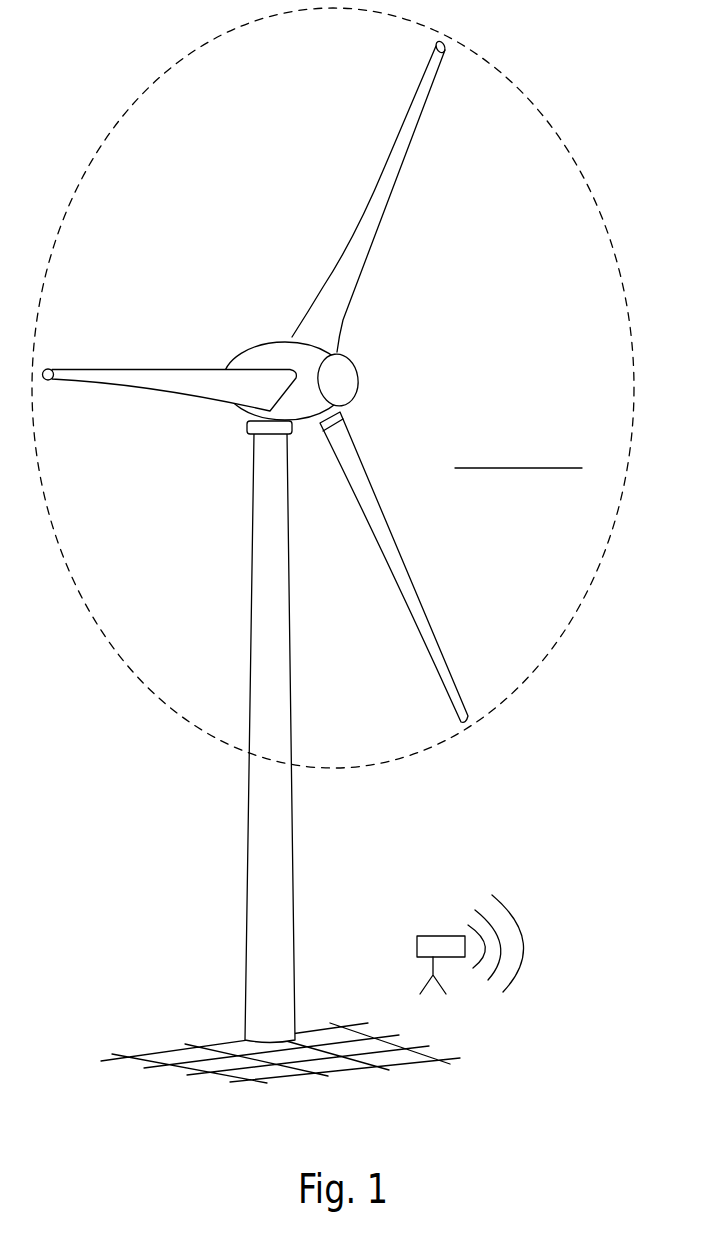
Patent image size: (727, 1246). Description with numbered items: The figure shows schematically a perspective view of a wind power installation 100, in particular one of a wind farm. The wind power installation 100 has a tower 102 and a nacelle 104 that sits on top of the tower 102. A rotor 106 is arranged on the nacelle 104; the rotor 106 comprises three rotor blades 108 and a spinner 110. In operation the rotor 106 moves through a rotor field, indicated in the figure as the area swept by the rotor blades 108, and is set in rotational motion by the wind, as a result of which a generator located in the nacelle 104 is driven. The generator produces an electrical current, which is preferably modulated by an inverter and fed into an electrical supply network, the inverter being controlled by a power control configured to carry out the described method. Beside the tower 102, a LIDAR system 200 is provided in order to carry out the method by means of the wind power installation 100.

The wind power installation 100 is at (333, 545).
The tower 102 is at (260, 838).
The nacelle 104 is at (263, 357).
The rotor 106 is at (333, 388).
The rotor blades 108 is at (395, 153).
The spinner 110 is at (345, 379).
The LIDAR system 200 is at (432, 936).